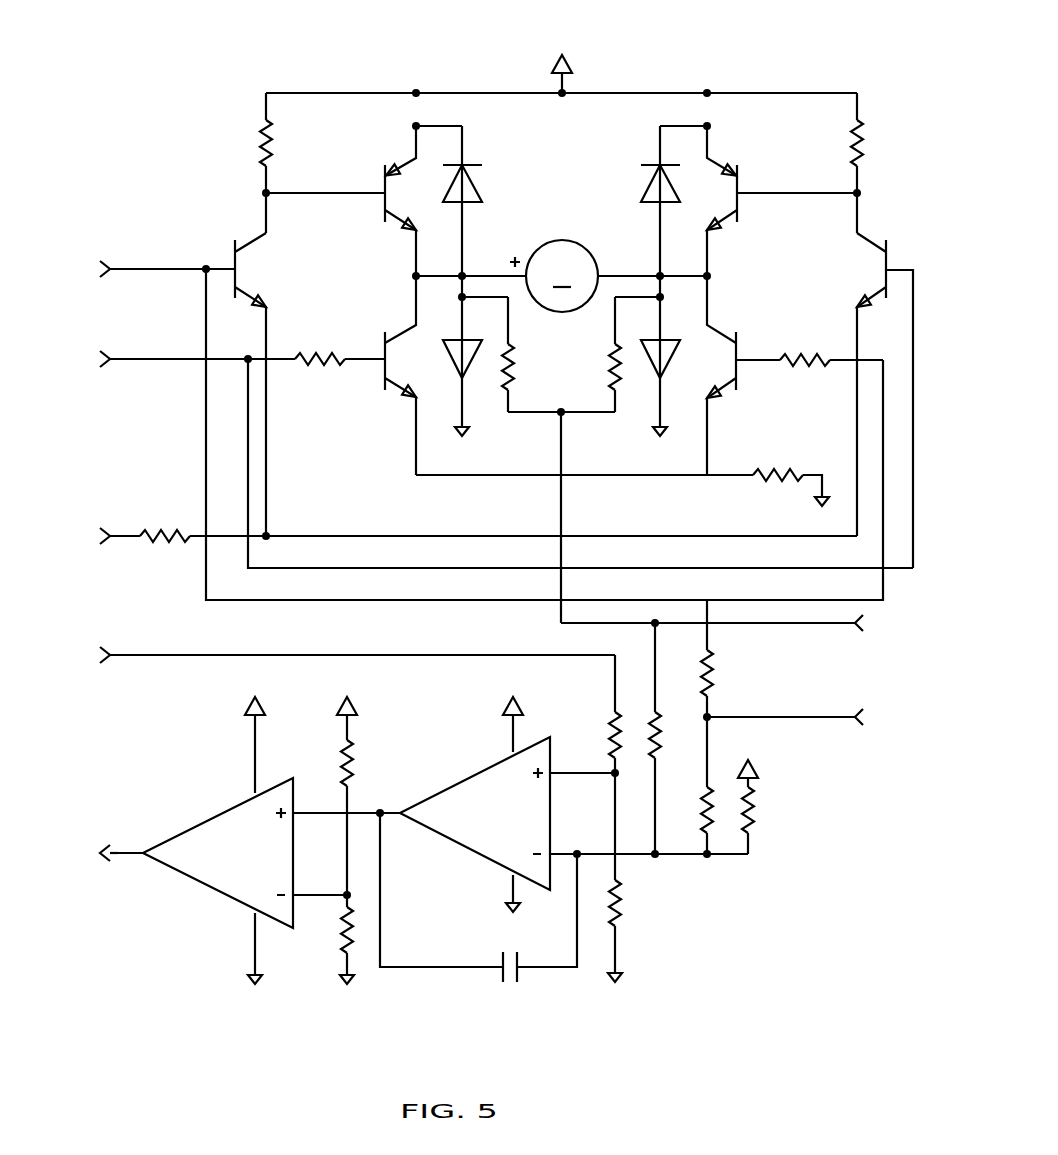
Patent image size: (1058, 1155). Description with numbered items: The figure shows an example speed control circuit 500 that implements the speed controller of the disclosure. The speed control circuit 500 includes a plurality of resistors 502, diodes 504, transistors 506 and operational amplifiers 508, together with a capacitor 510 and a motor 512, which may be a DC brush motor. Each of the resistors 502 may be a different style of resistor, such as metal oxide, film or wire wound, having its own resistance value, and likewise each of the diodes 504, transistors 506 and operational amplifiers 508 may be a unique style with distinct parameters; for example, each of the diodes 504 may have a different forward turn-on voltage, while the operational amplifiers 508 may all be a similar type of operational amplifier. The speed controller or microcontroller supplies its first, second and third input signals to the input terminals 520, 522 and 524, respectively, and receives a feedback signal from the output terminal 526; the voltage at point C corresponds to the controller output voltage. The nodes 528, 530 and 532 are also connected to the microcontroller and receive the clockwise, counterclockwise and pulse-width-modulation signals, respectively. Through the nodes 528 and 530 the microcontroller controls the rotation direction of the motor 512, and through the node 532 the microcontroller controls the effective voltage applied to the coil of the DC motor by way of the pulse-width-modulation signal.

The speed control circuit 500 is at (476, 507).
The resistors 502 is at (259, 148).
The diodes 504 is at (451, 204).
The transistors 506 is at (384, 170).
The operational amplifiers 508 is at (219, 812).
The capacitor 510 is at (520, 977).
The motor 512 is at (560, 239).
The input terminal 520 is at (63, 655).
The input terminal 522 is at (906, 627).
The input terminal 524 is at (907, 719).
The output terminal 526 is at (62, 870).
The node 528 is at (57, 268).
The node 530 is at (46, 359).
The node 532 is at (46, 536).